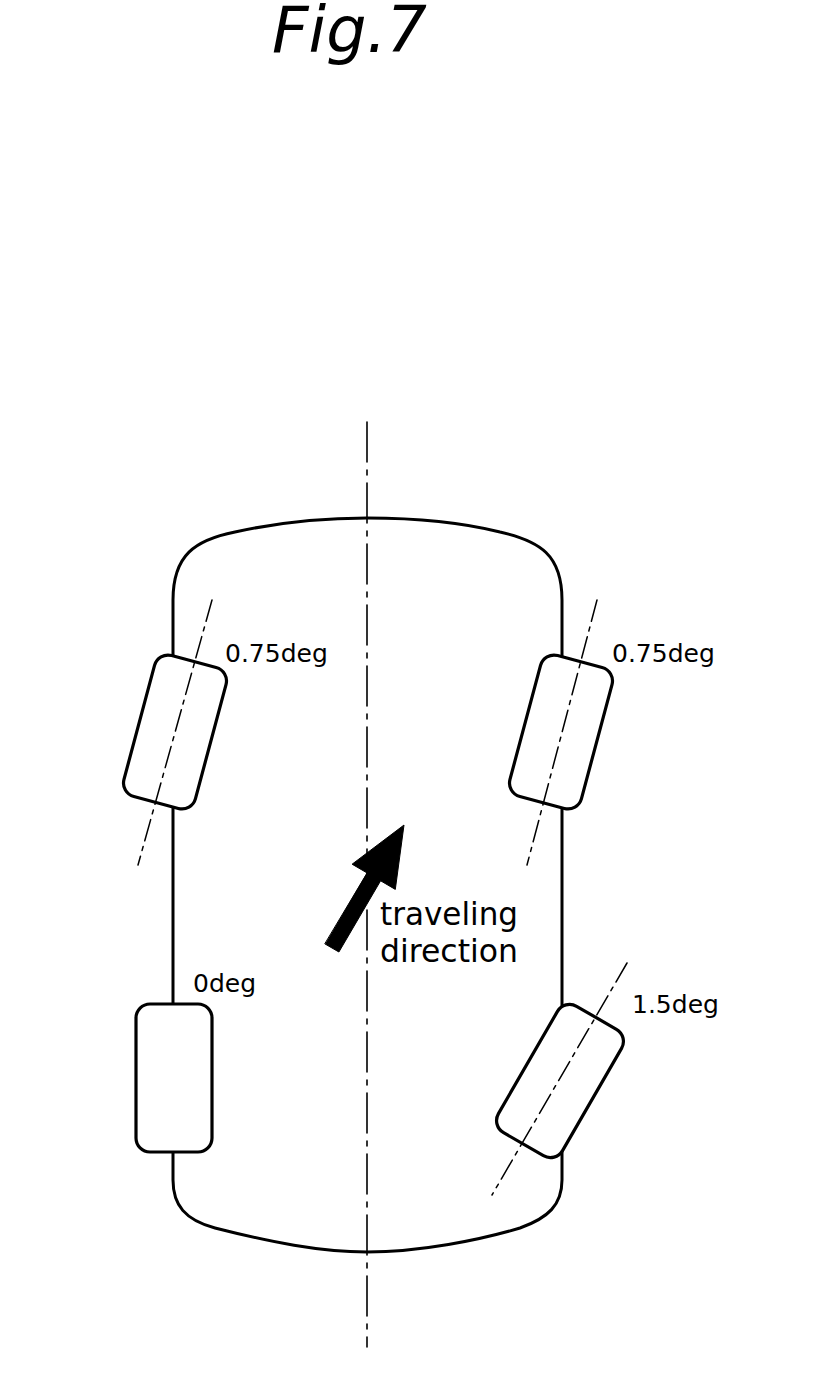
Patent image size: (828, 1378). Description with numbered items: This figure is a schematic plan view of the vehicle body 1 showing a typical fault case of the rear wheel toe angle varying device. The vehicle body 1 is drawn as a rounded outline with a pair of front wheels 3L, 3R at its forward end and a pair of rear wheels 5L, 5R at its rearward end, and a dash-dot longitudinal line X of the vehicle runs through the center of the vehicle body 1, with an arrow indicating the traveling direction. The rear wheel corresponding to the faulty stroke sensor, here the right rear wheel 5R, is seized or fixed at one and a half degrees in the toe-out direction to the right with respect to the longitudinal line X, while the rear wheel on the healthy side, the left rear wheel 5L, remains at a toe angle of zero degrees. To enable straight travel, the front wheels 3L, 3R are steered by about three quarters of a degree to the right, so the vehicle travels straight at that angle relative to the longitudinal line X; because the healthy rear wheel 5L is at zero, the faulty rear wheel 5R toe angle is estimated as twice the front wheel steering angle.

The vehicle body 1 is at (508, 543).
The left front wheel 3L is at (145, 714).
The right front wheel 3R is at (590, 750).
The left rear wheel 5L is at (145, 1097).
The right rear wheel 5R is at (590, 1092).
The longitudinal line X is at (368, 452).